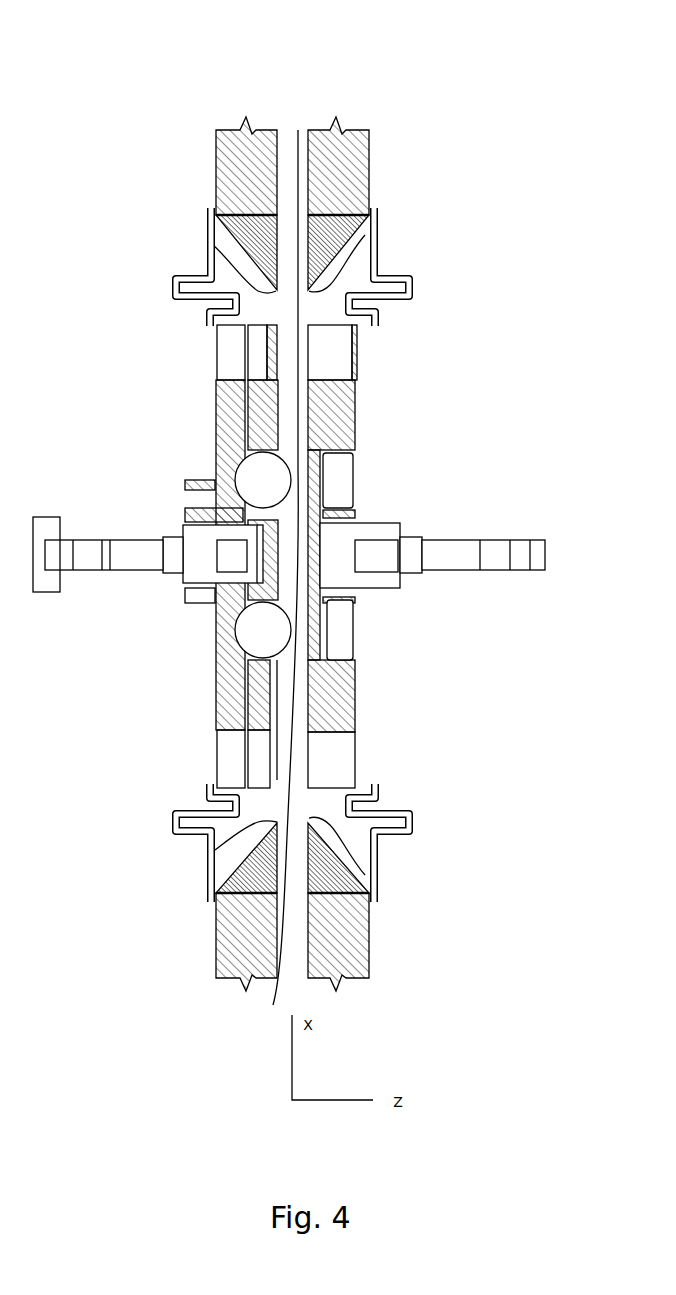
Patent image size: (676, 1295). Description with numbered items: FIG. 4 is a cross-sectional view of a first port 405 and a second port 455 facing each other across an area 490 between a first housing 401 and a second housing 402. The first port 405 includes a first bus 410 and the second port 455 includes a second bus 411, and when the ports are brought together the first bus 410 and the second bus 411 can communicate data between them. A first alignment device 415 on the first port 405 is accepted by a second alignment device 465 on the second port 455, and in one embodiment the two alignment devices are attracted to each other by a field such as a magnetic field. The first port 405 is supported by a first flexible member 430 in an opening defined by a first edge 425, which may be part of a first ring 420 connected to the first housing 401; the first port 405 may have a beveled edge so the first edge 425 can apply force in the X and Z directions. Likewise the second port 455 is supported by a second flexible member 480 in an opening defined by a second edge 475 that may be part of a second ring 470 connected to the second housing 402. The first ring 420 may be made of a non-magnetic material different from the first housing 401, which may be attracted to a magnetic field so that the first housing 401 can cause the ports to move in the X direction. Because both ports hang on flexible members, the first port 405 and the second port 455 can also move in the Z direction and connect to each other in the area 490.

The first housing 401 is at (216, 150).
The second housing 402 is at (369, 158).
The first port 405 is at (218, 708).
The first bus 410 is at (273, 1005).
The second bus 411 is at (298, 130).
The first alignment device 415 is at (243, 455).
The first ring 420 is at (222, 217).
The first edge 425 is at (213, 245).
The first flexible member 430 is at (192, 300).
The second port 455 is at (355, 703).
The second alignment device 465 is at (323, 482).
The second ring 470 is at (362, 215).
The second edge 475 is at (365, 235).
The second flexible member 480 is at (398, 278).
The area 490 is at (290, 122).